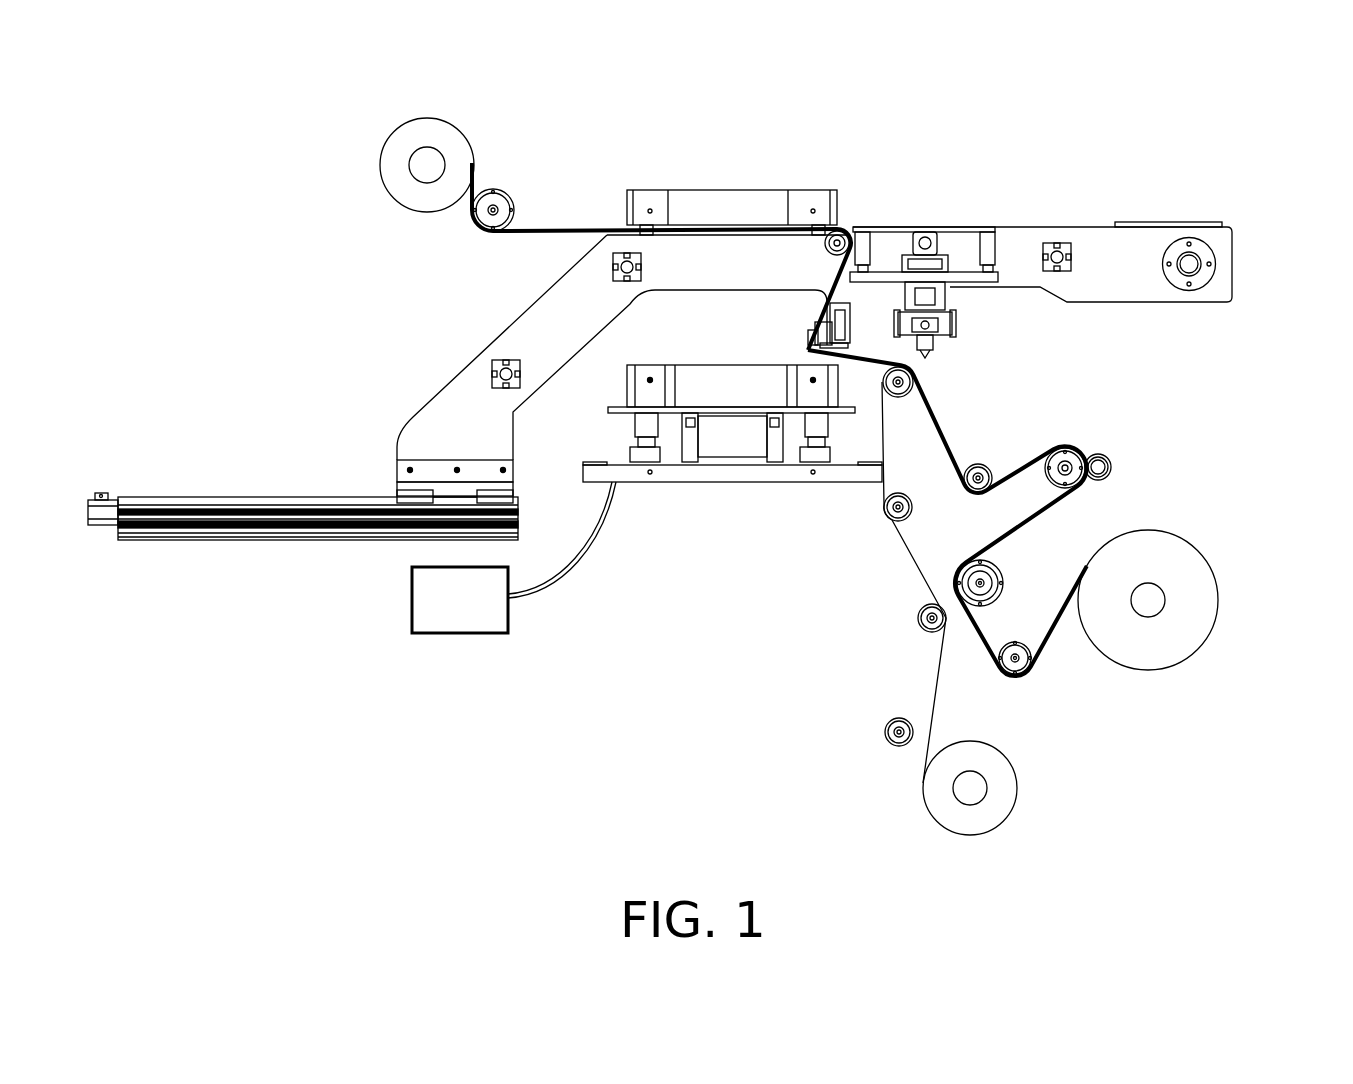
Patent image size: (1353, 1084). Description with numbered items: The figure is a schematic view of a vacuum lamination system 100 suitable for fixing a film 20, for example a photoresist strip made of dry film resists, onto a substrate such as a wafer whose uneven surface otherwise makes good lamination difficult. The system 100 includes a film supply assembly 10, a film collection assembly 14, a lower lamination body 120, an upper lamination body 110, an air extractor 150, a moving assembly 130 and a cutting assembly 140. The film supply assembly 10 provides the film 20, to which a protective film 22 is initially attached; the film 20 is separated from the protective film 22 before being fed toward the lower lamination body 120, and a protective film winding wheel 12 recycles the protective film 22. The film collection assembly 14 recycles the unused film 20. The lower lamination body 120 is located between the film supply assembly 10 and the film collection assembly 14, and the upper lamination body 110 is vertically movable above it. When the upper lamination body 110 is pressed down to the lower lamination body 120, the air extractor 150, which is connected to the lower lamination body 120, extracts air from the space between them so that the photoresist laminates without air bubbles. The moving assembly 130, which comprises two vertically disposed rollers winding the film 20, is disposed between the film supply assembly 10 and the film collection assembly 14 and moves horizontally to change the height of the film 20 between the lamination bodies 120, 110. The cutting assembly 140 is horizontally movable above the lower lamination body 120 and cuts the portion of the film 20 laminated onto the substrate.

The vacuum lamination system 100 is at (1216, 140).
The film supply assembly 10 is at (1212, 572).
The protective film winding wheel 12 is at (1012, 805).
The film collection assembly 14 is at (395, 128).
The film 20 is at (1067, 598).
The protective film 22 is at (935, 665).
The upper lamination body 110 is at (816, 191).
The lower lamination body 120 is at (627, 380).
The moving assembly 130 is at (870, 322).
The cutting assembly 140 is at (953, 326).
The air extractor 150 is at (460, 634).